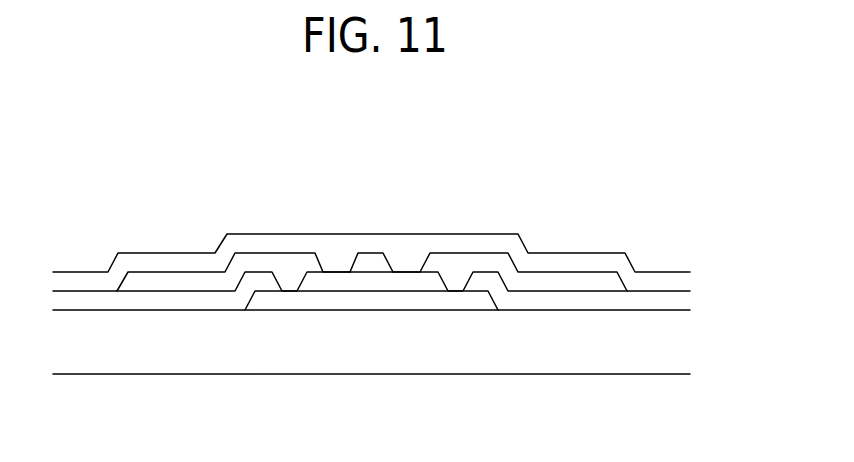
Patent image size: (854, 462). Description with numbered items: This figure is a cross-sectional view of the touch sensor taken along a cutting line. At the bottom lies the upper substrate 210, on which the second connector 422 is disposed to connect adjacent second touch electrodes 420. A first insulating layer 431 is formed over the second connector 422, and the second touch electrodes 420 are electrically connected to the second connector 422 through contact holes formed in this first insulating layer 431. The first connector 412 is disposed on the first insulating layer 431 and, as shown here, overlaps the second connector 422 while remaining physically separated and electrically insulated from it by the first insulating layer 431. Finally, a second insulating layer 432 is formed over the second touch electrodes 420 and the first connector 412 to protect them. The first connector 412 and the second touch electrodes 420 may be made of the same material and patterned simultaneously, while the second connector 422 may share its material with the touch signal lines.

The upper substrate 210 is at (610, 347).
The first connector 412 is at (372, 262).
The second touch electrode 420 is at (174, 283).
The second connector 422 is at (372, 302).
The first insulating layer 431 is at (417, 282).
The second insulating layer 432 is at (465, 243).